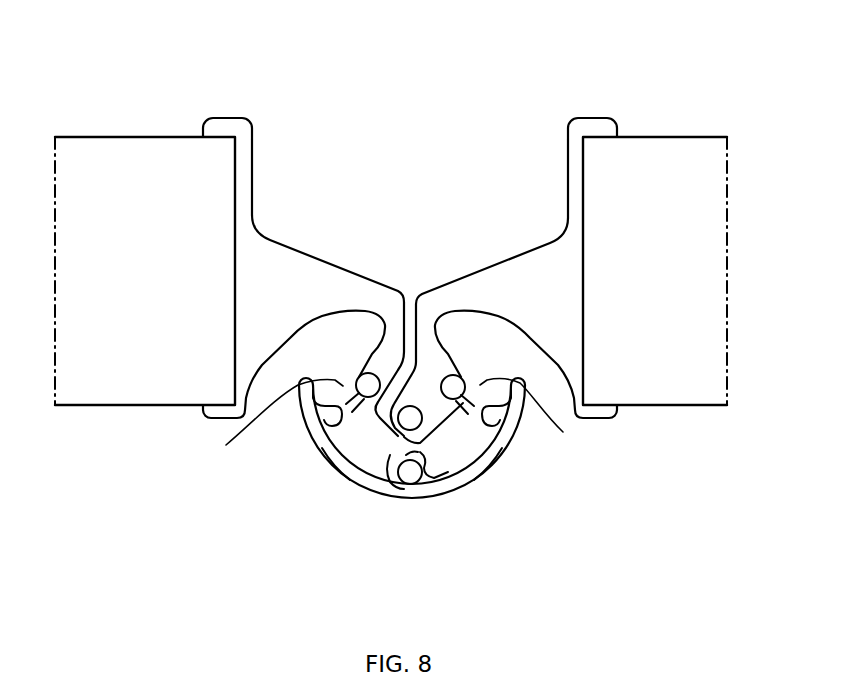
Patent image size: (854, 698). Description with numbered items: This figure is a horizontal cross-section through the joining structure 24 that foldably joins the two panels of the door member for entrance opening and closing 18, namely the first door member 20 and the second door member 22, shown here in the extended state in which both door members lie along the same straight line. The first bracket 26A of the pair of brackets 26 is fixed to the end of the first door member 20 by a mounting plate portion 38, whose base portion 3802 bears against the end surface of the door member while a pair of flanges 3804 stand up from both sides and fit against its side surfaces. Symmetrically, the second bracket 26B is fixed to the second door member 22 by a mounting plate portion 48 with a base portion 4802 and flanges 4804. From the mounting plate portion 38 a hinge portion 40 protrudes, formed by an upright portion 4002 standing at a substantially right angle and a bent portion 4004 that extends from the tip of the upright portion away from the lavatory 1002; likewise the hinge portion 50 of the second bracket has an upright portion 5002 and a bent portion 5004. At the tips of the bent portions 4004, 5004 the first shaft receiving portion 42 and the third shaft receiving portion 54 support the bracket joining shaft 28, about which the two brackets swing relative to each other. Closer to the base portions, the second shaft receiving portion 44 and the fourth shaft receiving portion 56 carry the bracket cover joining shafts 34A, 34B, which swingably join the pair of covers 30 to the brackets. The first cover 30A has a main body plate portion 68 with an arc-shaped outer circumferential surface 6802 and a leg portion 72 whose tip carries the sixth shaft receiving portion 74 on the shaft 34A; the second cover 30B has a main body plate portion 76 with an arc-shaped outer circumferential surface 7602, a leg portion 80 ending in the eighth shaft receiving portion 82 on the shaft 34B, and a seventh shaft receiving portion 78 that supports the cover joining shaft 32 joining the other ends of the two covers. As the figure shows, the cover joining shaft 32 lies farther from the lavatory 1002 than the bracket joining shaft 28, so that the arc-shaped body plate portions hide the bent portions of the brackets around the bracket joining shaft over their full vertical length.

The lavatory 1002 is at (335, 41).
The joining structure 24 is at (403, 72).
The door member for entrance opening and closing 18 is at (409, 231).
The first door member 20 is at (77, 136).
The second door member 22 is at (705, 137).
The mounting plate portion 38 is at (181, 232).
The base portion 3802 is at (235, 273).
The flanges 3804 is at (230, 117).
The mounting plate portion 48 is at (628, 239).
The base portion 4802 is at (583, 278).
The flanges 4804 is at (600, 117).
The brackets 26 is at (410, 245).
The first bracket 26A is at (334, 276).
The second bracket 26B is at (475, 245).
The hinge portion 40 is at (334, 227).
The upright portion 4002 is at (330, 267).
The bent portion 4004 is at (403, 307).
The hinge portion 50 is at (475, 195).
The upright portion 5002 is at (500, 260).
The bent portion 5004 is at (427, 297).
The bracket cover joining shaft 34A is at (281, 385).
The bracket cover joining shaft 34B is at (518, 383).
The second shaft receiving portion 44 is at (357, 373).
The fourth shaft receiving portion 56 is at (470, 375).
The first shaft receiving portion 42 is at (388, 433).
The third shaft receiving portion 54 is at (460, 490).
The sixth shaft receiving portion 74 is at (340, 380).
The eighth shaft receiving portion 82 is at (485, 378).
The leg portion 72 is at (310, 437).
The leg portion 80 is at (512, 443).
The seventh shaft receiving portion 78 is at (410, 487).
The cover joining shaft 32 is at (437, 503).
The covers 30 is at (378, 473).
The first cover 30A is at (327, 463).
The second cover 30B is at (497, 462).
The bracket joining shaft 28 is at (355, 483).
The main body plate portion 68 is at (261, 508).
The arc-shaped outer circumferential surface 6802 is at (345, 478).
The main body plate portion 76 is at (551, 499).
The arc-shaped outer circumferential surface 7602 is at (478, 480).